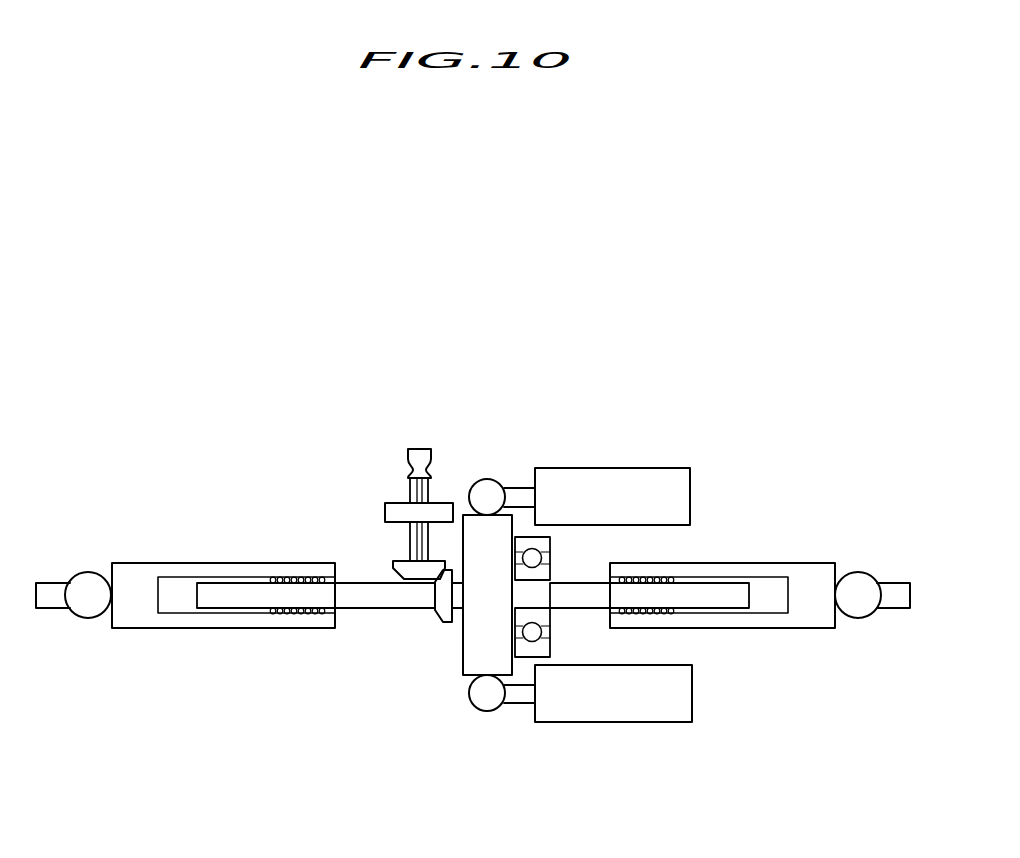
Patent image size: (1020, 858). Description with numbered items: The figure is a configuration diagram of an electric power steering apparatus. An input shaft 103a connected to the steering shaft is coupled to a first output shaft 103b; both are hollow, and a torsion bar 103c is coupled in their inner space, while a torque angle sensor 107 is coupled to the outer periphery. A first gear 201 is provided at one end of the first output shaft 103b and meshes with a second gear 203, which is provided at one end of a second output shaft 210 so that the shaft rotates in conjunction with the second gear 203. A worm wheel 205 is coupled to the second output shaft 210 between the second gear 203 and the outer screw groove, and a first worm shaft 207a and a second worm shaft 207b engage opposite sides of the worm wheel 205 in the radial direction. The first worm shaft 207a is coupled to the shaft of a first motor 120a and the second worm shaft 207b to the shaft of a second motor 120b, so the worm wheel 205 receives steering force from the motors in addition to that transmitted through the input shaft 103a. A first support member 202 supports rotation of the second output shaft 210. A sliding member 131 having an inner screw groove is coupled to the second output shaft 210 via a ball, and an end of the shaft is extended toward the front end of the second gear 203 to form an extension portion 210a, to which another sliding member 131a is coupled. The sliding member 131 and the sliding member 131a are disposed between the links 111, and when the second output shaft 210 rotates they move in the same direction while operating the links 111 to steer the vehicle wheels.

The link 111 is at (88, 612).
The sliding member 131a is at (200, 622).
The sliding member 131 is at (812, 612).
The extension portion 210a is at (362, 597).
The second output shaft 210 is at (727, 590).
The second gear 203 is at (440, 605).
The worm wheel 205 is at (472, 660).
The first worm shaft 207a is at (487, 480).
The second worm shaft 207b is at (487, 695).
The first motor 120a is at (612, 478).
The second motor 120b is at (627, 700).
The first support member 202 is at (535, 632).
The first gear 201 is at (395, 568).
The torsion bar 103c is at (413, 493).
The first output shaft 103b is at (410, 543).
The torque angle sensor 107 is at (391, 506).
The input shaft 103a is at (418, 452).